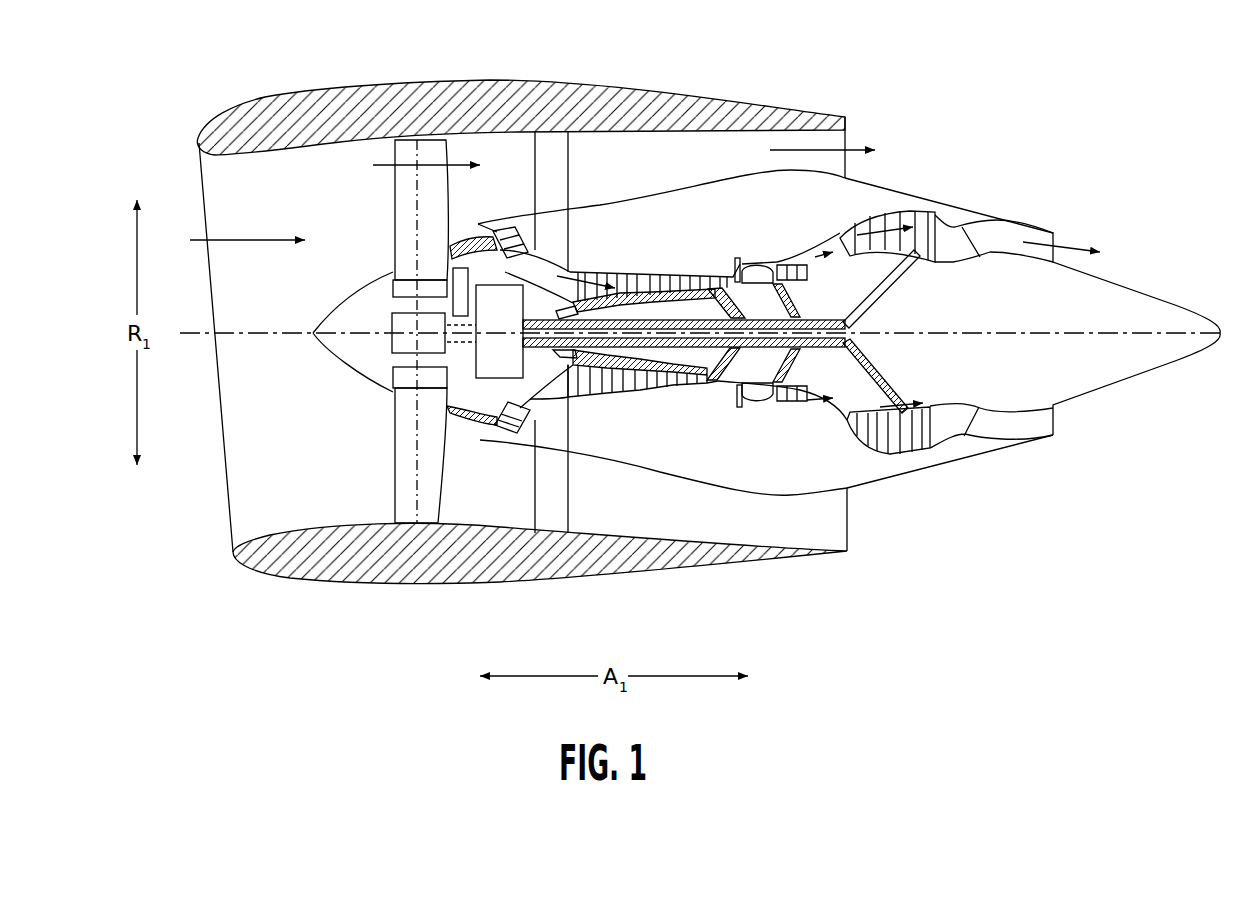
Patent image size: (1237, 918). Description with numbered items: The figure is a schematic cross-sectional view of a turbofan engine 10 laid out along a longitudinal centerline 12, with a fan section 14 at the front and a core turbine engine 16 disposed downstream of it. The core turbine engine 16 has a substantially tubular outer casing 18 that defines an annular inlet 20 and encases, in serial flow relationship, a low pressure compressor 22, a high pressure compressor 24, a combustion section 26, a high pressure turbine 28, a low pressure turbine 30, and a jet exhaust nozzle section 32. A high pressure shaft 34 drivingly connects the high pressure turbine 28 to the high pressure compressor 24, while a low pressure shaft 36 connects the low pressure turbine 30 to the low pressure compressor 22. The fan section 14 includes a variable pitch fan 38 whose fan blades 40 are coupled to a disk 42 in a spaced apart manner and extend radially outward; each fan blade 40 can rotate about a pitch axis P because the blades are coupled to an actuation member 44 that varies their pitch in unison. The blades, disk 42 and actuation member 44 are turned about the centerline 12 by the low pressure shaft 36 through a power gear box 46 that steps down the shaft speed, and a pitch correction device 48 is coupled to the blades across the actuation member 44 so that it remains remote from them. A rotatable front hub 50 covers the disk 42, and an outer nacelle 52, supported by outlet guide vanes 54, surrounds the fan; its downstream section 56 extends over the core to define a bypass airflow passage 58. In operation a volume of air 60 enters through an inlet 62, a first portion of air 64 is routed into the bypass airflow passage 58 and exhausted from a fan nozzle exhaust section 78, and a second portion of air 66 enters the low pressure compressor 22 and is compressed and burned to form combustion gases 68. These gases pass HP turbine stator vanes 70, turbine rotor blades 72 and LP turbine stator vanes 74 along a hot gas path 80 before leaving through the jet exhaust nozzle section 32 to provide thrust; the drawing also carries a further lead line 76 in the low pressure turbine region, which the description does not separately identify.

The turbofan engine 10 is at (978, 96).
The longitudinal centerline 12 is at (1000, 333).
The fan section 14 is at (432, 52).
The core turbine engine 16 is at (727, 235).
The outer casing 18 is at (712, 480).
The annular inlet 20 is at (480, 432).
The low pressure compressor 22 is at (537, 393).
The high pressure compressor 24 is at (597, 390).
The combustion section 26 is at (750, 398).
The high pressure turbine 28 is at (893, 392).
The low pressure turbine 30 is at (921, 450).
The jet exhaust nozzle section 32 is at (978, 432).
The high pressure shaft 34 is at (760, 300).
The low pressure shaft 36 is at (868, 316).
The variable pitch fan 38 is at (362, 377).
The fan blades 40 is at (393, 470).
The disk 42 is at (410, 292).
The actuation member 44 is at (392, 315).
The power gear box 46 is at (510, 307).
The pitch correction device 48 is at (456, 266).
The rotatable front hub 50 is at (340, 353).
The outer nacelle 52 is at (437, 583).
The outlet guide vanes 54 is at (570, 158).
The downstream section 56 is at (776, 101).
The bypass airflow passage 58 is at (710, 169).
The volume of air 60 is at (248, 240).
The inlet 62 is at (233, 550).
The first portion of air 64 is at (400, 160).
The second portion of air 66 is at (470, 232).
The combustion gases 68 is at (790, 262).
The HP turbine stator vanes 70 is at (767, 400).
The turbine rotor blades 72 is at (884, 215).
The LP turbine stator vanes 74 is at (850, 435).
The turbine shroud 76 is at (863, 445).
The fan nozzle exhaust section 78 is at (838, 138).
The hot gas path 80 is at (836, 235).
The pitch axis P is at (443, 150).